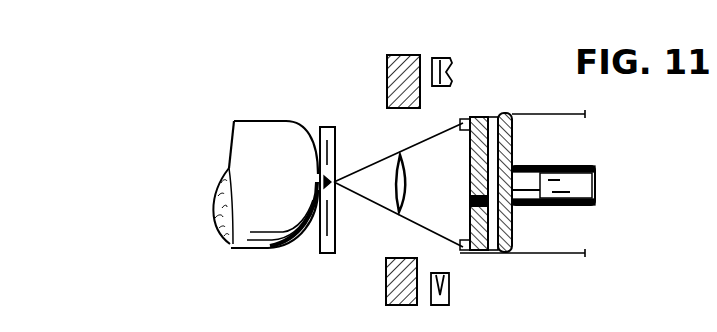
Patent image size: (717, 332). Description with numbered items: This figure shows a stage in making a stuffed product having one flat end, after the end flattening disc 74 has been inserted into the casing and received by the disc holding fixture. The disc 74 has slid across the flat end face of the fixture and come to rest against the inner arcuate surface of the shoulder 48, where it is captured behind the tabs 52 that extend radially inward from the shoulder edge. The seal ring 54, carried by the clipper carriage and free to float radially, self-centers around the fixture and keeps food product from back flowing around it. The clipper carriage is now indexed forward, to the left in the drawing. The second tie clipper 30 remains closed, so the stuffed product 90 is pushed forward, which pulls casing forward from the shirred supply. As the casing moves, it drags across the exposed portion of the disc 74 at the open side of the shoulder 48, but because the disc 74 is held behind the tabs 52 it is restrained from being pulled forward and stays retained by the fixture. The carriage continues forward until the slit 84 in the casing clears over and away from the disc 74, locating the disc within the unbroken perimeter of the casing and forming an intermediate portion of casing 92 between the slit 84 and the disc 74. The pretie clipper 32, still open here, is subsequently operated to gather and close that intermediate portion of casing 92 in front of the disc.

The second tie clipper 30 is at (320, 127).
The pretie clipper 32 is at (450, 73).
The shoulder 48 is at (474, 113).
The tabs 52 is at (462, 128).
The seal ring 54 is at (387, 74).
The disc 74 is at (470, 203).
The slit 84 is at (393, 173).
The stuffed product 90 is at (222, 228).
The intermediate portion of casing 92 is at (450, 252).